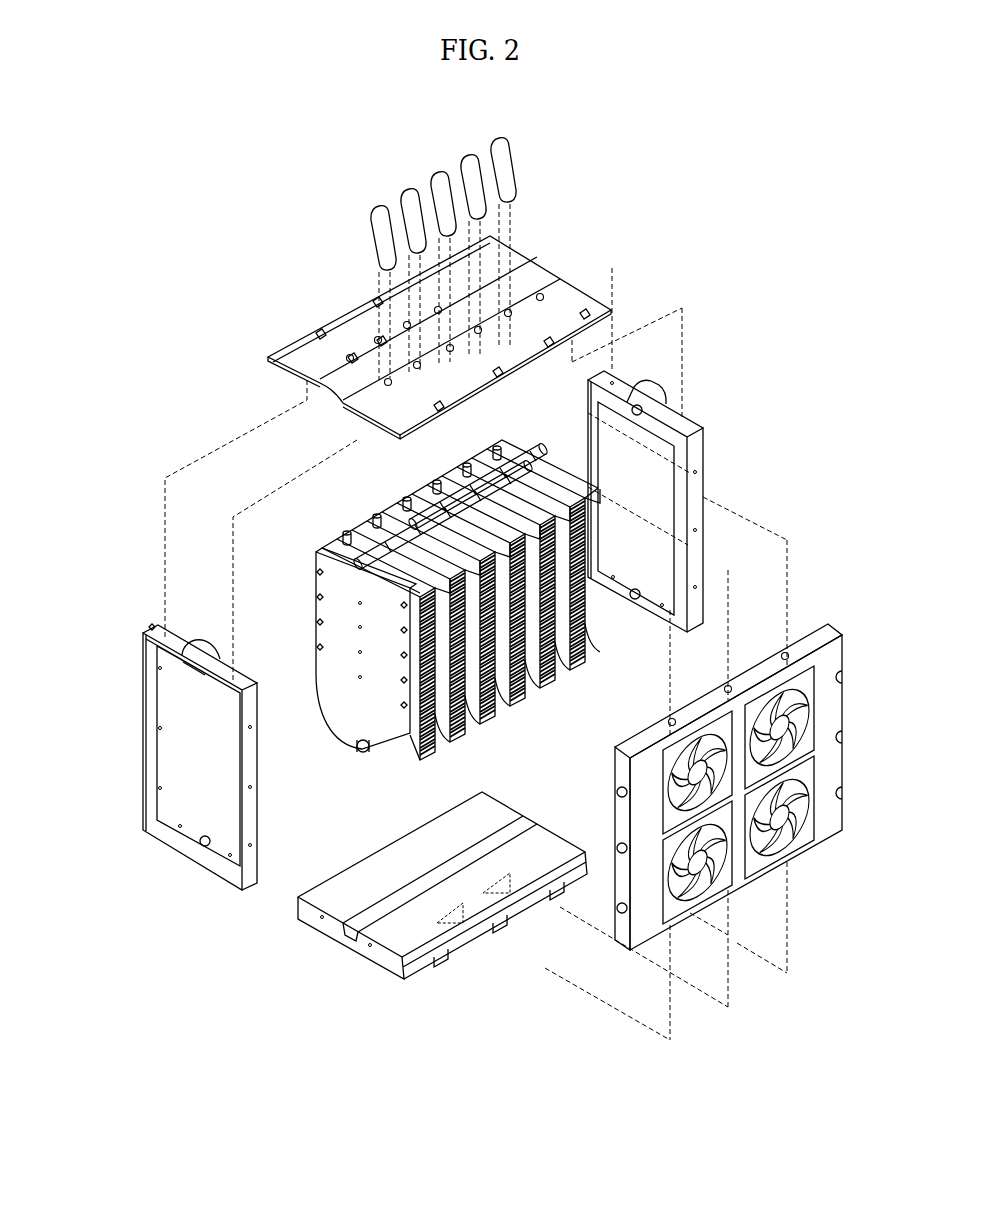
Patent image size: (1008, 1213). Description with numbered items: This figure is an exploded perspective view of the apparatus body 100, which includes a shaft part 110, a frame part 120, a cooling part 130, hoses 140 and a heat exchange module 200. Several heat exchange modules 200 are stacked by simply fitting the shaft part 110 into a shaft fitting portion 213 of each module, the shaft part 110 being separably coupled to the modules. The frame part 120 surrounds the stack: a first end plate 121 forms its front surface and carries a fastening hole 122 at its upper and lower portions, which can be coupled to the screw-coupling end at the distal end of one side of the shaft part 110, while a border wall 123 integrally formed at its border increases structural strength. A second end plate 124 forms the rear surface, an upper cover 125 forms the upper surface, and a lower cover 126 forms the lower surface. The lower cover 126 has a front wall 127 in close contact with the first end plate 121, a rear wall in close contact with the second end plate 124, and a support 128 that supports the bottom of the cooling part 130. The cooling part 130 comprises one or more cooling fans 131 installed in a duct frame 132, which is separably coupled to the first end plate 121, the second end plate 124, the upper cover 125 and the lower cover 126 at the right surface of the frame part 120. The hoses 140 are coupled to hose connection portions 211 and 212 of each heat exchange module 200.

The apparatus body 100 is at (248, 144).
The shaft part 110 is at (354, 758).
The frame part 120 is at (705, 485).
The first end plate 121 is at (163, 757).
The fastening hole 122 is at (192, 845).
The border wall 123 is at (146, 700).
The second end plate 124 is at (703, 500).
The upper cover 125 is at (563, 272).
The lower cover 126 is at (508, 922).
The front wall 127 is at (442, 928).
The support 128 is at (428, 973).
The cooling part 130 is at (731, 758).
The cooling fan 131 is at (758, 888).
The duct frame 132 is at (836, 636).
The hose 140 is at (518, 150).
The heat exchange module 200 is at (421, 647).
The hose connection portion 211 is at (347, 542).
The hose connection portion 212 is at (388, 528).
The shaft fitting portion 213 is at (378, 754).